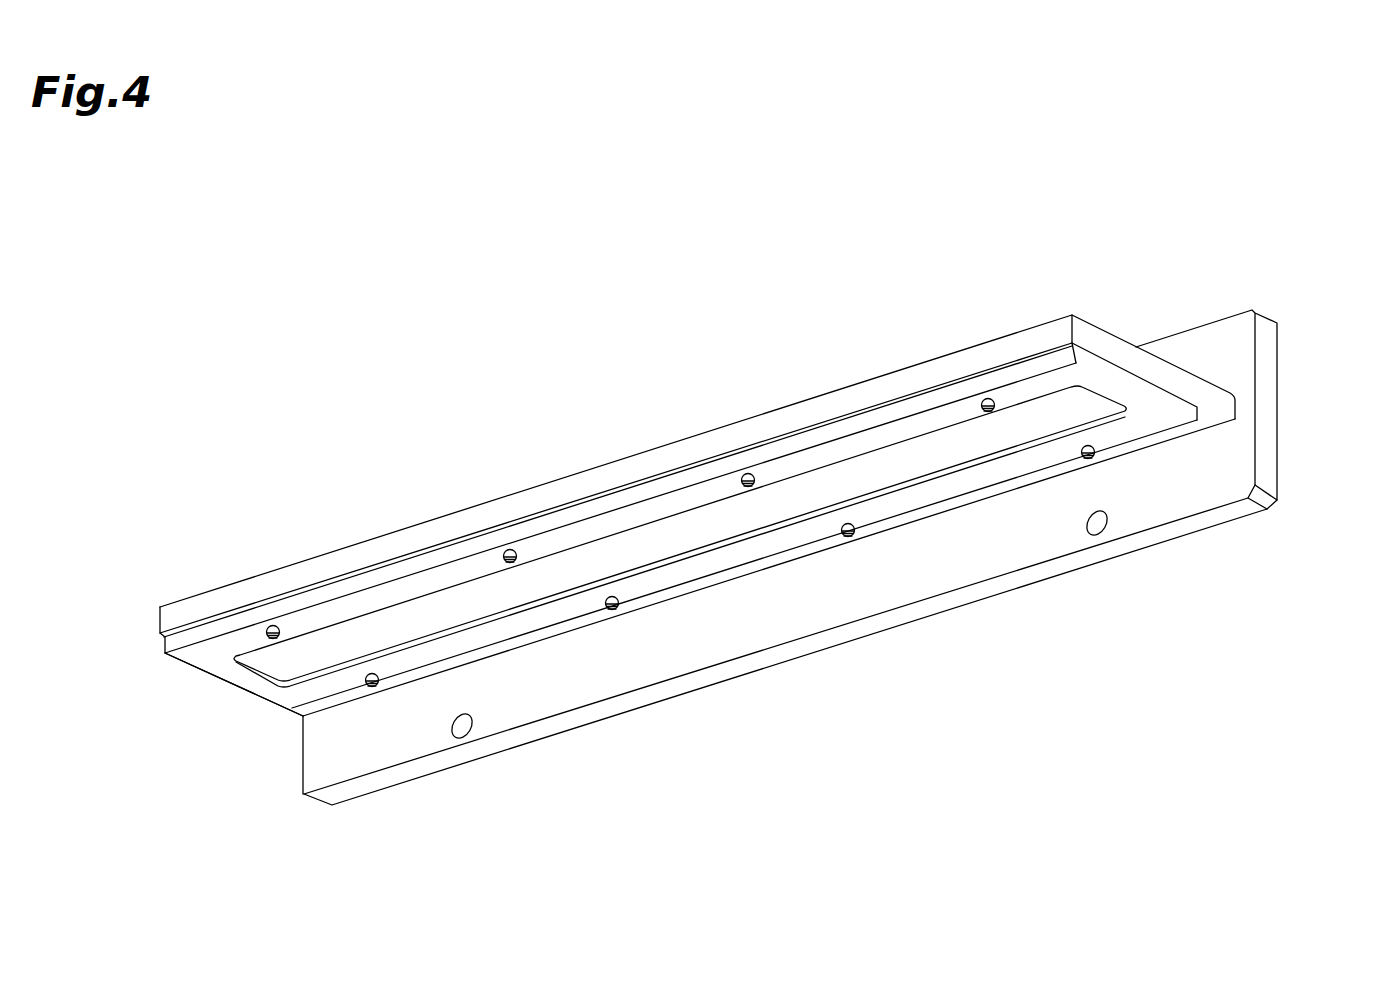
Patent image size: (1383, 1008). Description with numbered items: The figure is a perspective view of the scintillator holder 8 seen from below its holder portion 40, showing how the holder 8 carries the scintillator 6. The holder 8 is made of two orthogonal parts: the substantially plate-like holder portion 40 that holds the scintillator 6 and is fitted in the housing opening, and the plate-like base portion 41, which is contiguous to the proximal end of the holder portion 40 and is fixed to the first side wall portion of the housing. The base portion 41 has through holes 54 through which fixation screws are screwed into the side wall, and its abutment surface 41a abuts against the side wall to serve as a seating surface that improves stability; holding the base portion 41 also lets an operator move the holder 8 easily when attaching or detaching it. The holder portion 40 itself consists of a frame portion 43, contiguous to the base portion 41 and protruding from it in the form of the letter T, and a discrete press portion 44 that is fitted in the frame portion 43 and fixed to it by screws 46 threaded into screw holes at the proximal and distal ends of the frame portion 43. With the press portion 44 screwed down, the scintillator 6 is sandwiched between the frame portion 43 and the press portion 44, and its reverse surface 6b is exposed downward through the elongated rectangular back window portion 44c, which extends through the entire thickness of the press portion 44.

The scintillator holder 8 is at (397, 370).
The scintillator 6 is at (680, 589).
The reverse surface 6b is at (681, 540).
The holder portion 40 is at (212, 693).
The base portion 41 is at (766, 570).
The abutment surface 41a is at (707, 682).
The frame portion 43 is at (883, 374).
The press portion 44 is at (1198, 417).
The back window portion 44c is at (578, 562).
The screws 46 is at (748, 474).
The through holes 54 is at (462, 742).